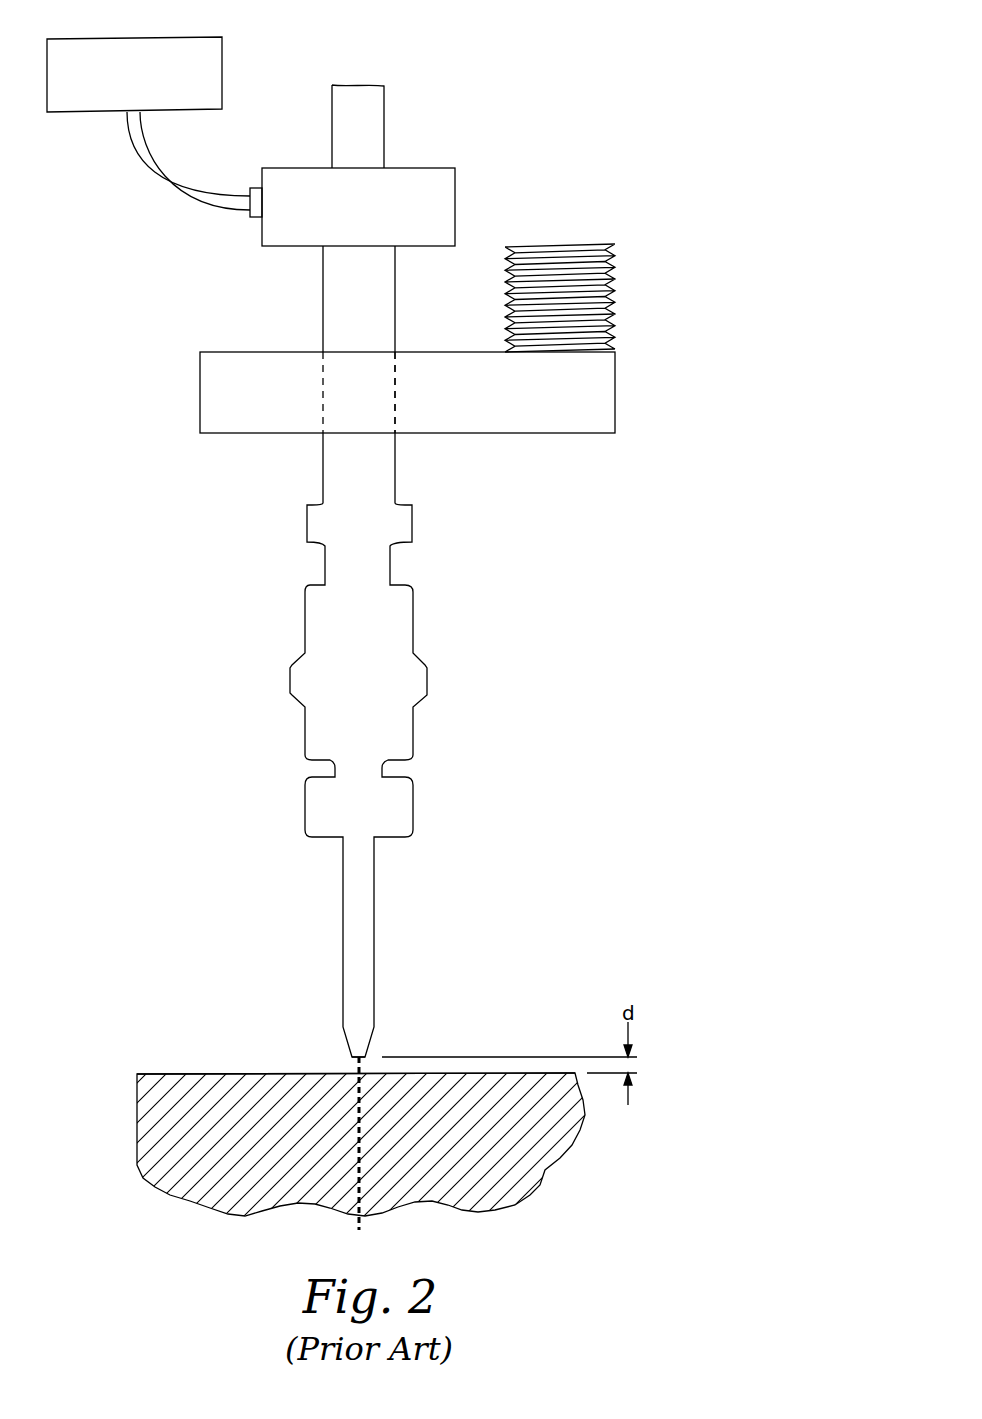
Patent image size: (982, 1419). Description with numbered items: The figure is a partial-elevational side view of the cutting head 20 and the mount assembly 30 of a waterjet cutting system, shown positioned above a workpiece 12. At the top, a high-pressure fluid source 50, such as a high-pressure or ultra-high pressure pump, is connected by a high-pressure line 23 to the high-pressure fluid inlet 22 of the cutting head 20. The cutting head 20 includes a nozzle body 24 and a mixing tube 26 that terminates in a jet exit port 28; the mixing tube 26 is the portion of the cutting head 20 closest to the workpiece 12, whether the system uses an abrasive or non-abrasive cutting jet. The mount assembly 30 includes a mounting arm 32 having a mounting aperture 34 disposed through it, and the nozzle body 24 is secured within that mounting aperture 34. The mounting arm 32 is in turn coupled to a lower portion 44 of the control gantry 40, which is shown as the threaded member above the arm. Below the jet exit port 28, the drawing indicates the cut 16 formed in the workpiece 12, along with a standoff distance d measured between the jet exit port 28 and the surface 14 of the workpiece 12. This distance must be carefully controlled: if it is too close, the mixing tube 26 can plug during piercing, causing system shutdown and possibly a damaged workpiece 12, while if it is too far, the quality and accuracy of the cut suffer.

The workpiece 12 is at (110, 1092).
The surface 14 is at (190, 1074).
The kerf / cut 16 is at (358, 1068).
The cutting head 20 is at (483, 135).
The high-pressure fluid inlet 22 is at (250, 214).
The high-pressure line 23 is at (150, 183).
The nozzle body 24 is at (395, 465).
The mixing tube 26 is at (374, 928).
The jet exit port 28 is at (353, 1057).
The mount assembly 30 is at (680, 448).
The mounting arm 32 is at (200, 392).
The mounting aperture 34 is at (395, 372).
The control gantry 40 is at (638, 147).
The lower portion 44 is at (615, 278).
The high-pressure fluid source 50 is at (222, 68).